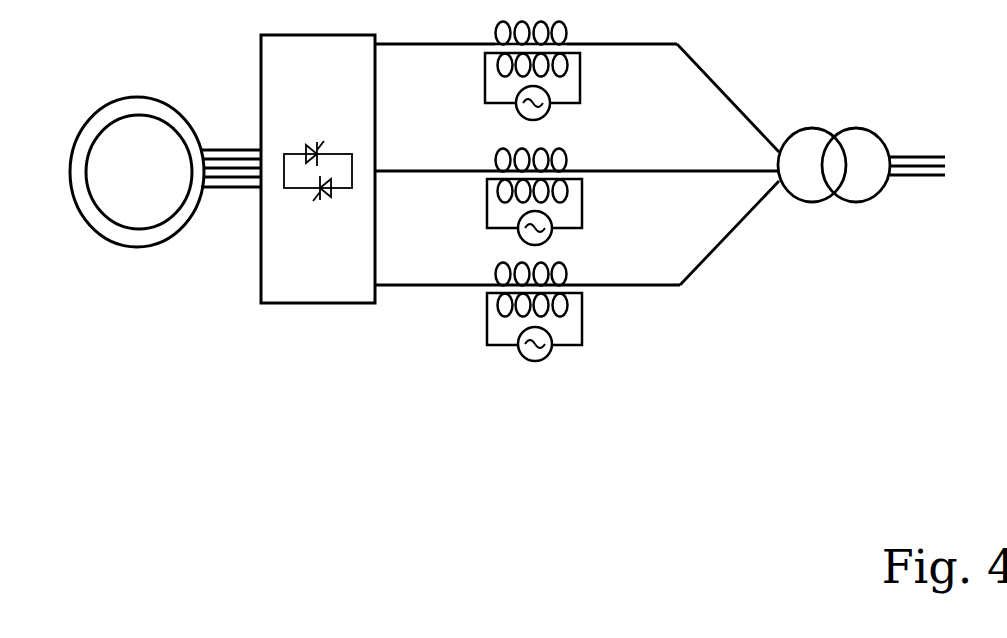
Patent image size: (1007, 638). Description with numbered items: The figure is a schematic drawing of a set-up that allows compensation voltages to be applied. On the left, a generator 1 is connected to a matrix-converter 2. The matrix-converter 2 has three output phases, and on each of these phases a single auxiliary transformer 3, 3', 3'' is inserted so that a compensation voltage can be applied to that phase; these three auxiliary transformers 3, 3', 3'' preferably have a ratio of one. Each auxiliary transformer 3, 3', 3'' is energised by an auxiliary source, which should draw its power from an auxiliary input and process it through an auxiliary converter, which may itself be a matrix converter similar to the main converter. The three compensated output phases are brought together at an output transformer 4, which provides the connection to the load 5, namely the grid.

The generator 1 is at (137, 172).
The matrix-converter 2 is at (318, 169).
The auxiliary transformer 3 is at (554, 71).
The auxiliary transformer 3' is at (557, 197).
The auxiliary transformer 3'' is at (562, 319).
The output transformer 4 is at (834, 143).
The load 5 is at (933, 192).